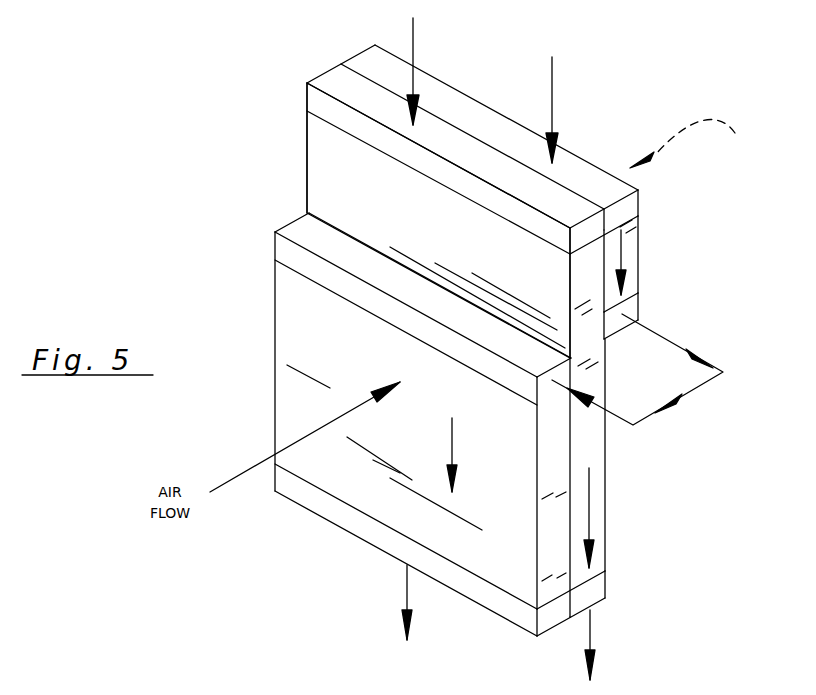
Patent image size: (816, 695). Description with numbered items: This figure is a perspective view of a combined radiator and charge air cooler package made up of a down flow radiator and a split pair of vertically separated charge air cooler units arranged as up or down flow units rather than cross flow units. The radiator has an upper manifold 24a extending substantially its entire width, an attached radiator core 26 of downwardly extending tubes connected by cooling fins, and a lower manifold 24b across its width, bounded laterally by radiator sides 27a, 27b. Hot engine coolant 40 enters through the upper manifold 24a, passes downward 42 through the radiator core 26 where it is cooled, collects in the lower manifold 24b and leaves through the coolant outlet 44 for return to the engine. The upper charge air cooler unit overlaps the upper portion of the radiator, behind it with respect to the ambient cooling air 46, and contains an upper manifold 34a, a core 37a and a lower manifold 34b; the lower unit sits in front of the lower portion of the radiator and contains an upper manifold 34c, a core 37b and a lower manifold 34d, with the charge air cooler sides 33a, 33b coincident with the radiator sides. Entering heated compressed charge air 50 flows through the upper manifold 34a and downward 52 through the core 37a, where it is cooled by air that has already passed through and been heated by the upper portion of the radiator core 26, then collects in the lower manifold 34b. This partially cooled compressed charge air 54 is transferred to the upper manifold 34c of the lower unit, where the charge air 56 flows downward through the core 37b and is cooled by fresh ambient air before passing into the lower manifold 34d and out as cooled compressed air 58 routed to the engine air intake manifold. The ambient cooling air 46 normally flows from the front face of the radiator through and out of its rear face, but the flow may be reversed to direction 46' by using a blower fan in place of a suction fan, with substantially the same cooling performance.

The upper manifold 24a is at (315, 100).
The lower manifold 24b is at (600, 592).
The radiator core 26 is at (350, 196).
The radiator side 27a is at (600, 447).
The radiator side 27b is at (307, 150).
The charge air cooler side 33a is at (630, 205).
The charge air cooler side 33b is at (276, 322).
The upper manifold of upper CAC unit 34a is at (593, 168).
The lower manifold of upper CAC unit 34b is at (632, 307).
The upper manifold of lower CAC unit 34c is at (283, 248).
The lower manifold of lower CAC unit 34d is at (339, 528).
The core of upper CAC unit 37a is at (633, 238).
The core of lower CAC unit 37b is at (320, 360).
The engine coolant 40 is at (413, 35).
The downward coolant flow 42 is at (589, 505).
The coolant outlet 44 is at (590, 636).
The ambient cooling air 46 is at (293, 437).
The reversed cooling air direction 46' is at (706, 144).
The entering compressed charge air 50 is at (552, 70).
The downward charge air flow 52 is at (621, 262).
The transferred charge air 54 is at (690, 393).
The partially cooled charge air 56 is at (452, 440).
The cooled compressed air 58 is at (407, 600).